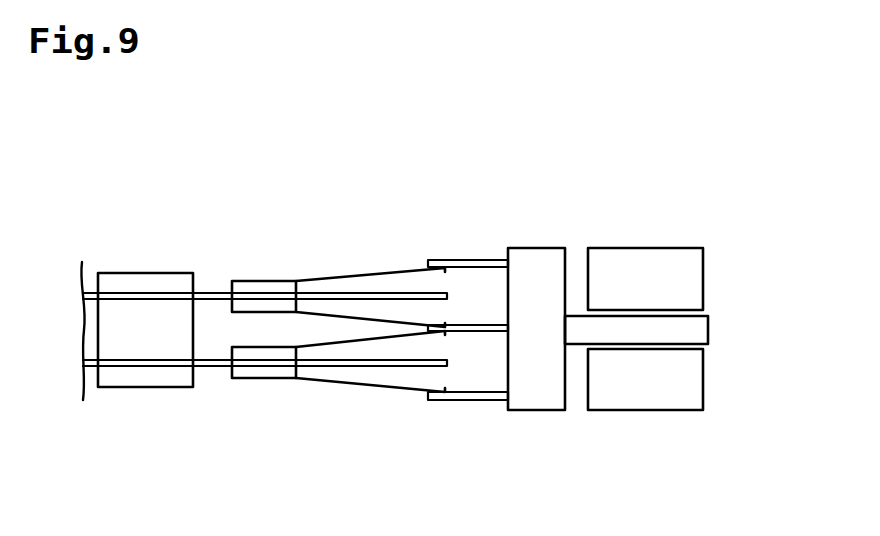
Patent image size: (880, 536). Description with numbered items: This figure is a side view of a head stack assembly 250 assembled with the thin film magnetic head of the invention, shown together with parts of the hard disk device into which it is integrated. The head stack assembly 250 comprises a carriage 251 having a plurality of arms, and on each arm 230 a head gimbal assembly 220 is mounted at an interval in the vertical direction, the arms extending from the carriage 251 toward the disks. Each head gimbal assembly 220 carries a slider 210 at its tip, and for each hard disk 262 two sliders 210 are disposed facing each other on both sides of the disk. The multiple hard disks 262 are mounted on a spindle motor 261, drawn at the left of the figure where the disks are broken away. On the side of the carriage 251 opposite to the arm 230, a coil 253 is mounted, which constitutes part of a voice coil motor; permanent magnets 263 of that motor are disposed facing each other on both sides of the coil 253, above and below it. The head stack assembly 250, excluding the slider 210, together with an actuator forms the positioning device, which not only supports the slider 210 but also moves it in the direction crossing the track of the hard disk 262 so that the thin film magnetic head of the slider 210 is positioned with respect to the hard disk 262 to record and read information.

The slider 210 is at (221, 290).
The head gimbal assembly 220 is at (353, 270).
The arm 230 is at (444, 259).
The head stack assembly 250 is at (547, 215).
The carriage 251 is at (538, 403).
The coil 253 is at (698, 330).
The spindle motor 261 is at (123, 278).
The hard disk 262 is at (205, 282).
The permanent magnet 263 is at (640, 248).